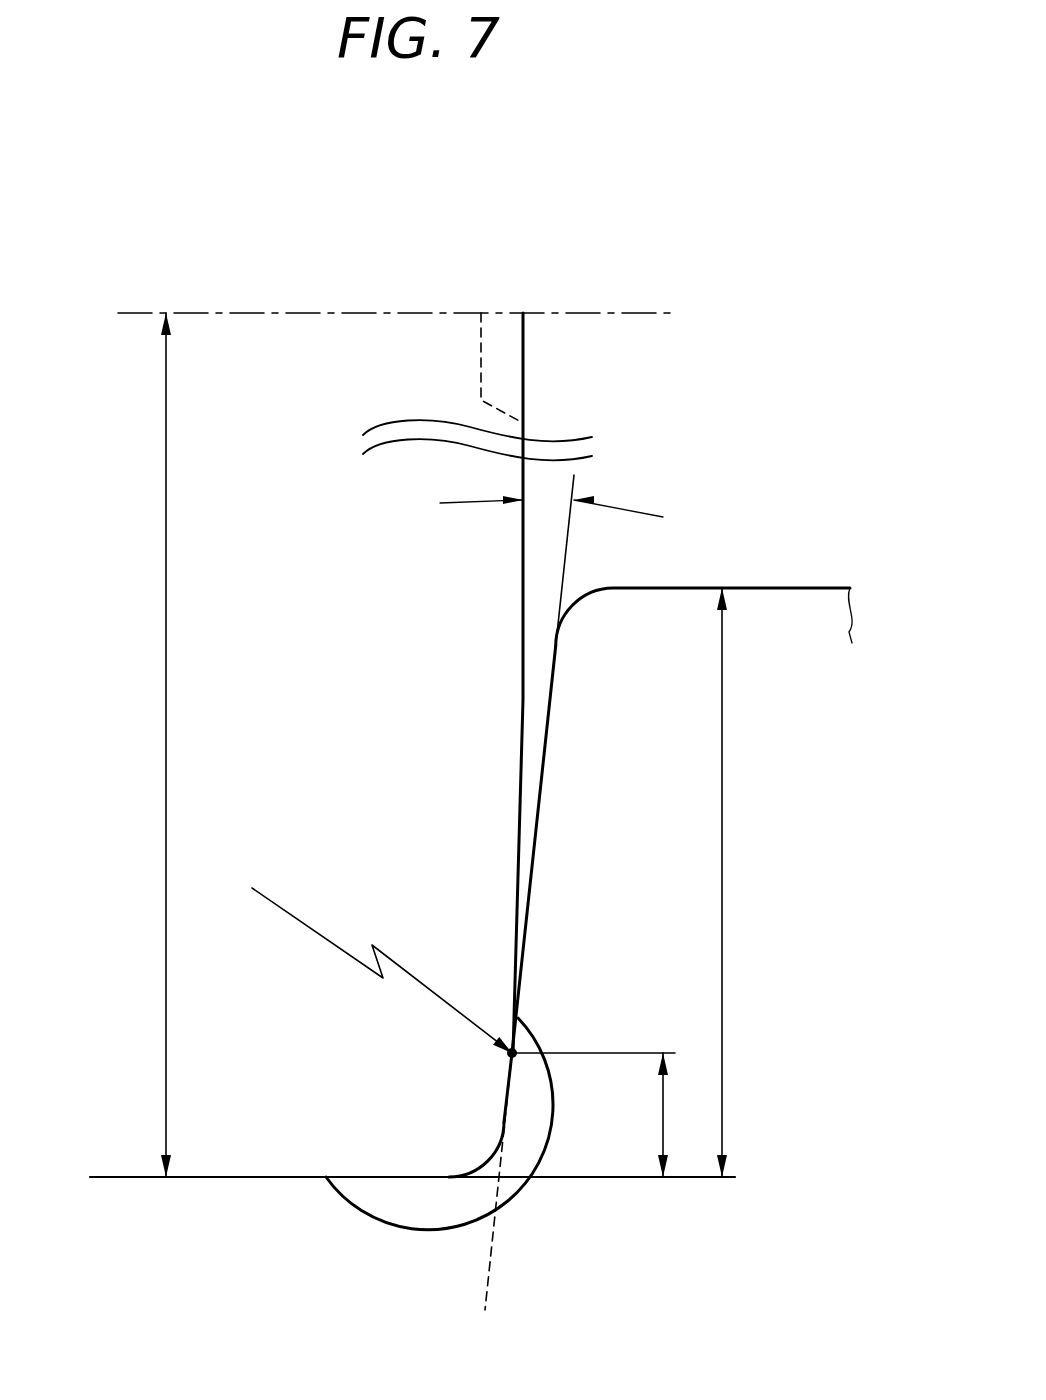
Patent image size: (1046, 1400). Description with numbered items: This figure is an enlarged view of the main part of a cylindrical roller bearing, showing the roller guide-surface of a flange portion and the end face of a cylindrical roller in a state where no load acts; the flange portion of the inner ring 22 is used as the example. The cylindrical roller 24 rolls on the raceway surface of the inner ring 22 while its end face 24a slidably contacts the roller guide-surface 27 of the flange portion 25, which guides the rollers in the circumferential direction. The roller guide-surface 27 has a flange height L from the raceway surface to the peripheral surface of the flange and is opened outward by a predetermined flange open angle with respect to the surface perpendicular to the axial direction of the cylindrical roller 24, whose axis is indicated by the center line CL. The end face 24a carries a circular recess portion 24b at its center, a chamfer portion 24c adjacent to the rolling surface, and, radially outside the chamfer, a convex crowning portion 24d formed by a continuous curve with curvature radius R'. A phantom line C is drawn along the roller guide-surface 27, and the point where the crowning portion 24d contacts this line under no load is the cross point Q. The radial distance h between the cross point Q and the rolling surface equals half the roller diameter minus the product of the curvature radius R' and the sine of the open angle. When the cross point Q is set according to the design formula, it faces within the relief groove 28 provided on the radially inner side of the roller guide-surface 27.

The inner ring 22 is at (147, 1220).
The cylindrical roller 24 is at (474, 835).
The end face 24a is at (517, 540).
The circular recess portion 24b is at (495, 368).
The chamfer portion 24c is at (465, 1170).
The crowning portion 24d is at (510, 1095).
The flange portion 25 is at (755, 620).
The roller guide-surface 27 is at (525, 708).
The relief groove 28 is at (530, 1188).
The center line CL is at (605, 313).
The cross point Q is at (528, 1036).
The phantom line C is at (492, 1205).
The curvature radius R' is at (382, 970).
The radial direction distance h is at (672, 1115).
The flange height L is at (733, 882).